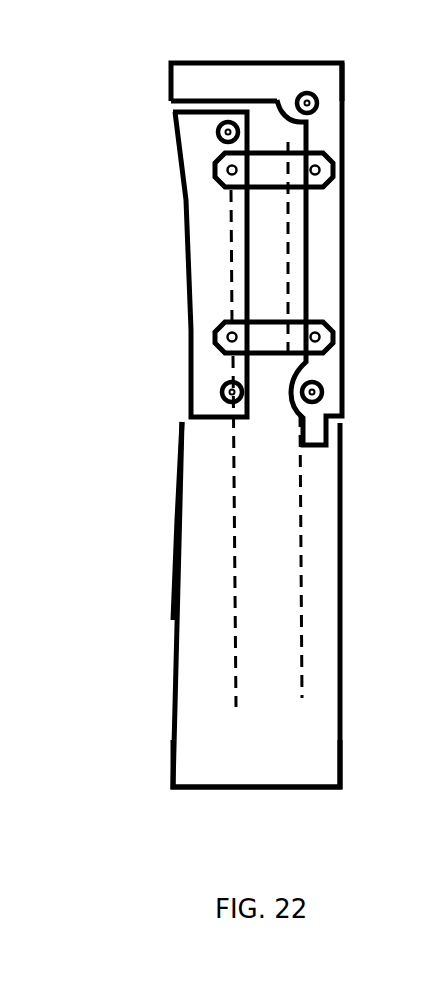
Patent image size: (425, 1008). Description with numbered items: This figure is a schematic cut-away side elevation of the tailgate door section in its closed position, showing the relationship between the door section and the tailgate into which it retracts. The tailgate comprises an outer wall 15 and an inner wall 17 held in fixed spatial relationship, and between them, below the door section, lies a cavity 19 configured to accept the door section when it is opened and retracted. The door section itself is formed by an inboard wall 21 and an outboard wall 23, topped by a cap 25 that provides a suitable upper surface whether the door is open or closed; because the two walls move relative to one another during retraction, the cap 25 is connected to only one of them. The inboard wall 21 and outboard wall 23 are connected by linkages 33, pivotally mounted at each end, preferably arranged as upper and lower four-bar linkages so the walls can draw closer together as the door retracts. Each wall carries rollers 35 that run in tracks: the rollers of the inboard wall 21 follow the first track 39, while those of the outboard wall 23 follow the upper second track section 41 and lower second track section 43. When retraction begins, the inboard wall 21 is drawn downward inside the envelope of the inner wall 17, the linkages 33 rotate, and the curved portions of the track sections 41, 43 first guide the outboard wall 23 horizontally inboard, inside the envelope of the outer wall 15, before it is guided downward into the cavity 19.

The outer wall 15 is at (341, 588).
The inner wall 17 is at (180, 488).
The cavity 19 is at (208, 732).
The inboard wall 21 is at (190, 236).
The outboard wall 23 is at (343, 273).
The cap 25 is at (195, 63).
The linkages 33 is at (335, 170).
The rollers 35 is at (217, 131).
The first track 39 is at (232, 275).
The upper second track section 41 is at (289, 222).
The lower second track section 43 is at (300, 492).